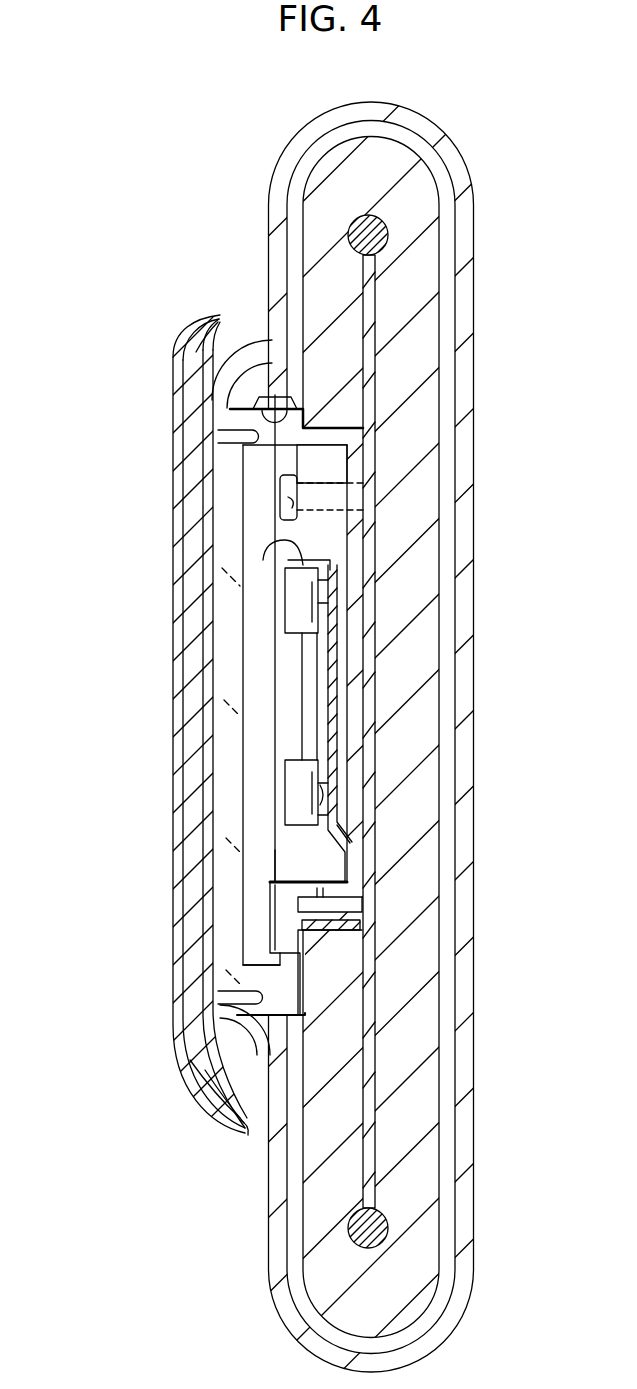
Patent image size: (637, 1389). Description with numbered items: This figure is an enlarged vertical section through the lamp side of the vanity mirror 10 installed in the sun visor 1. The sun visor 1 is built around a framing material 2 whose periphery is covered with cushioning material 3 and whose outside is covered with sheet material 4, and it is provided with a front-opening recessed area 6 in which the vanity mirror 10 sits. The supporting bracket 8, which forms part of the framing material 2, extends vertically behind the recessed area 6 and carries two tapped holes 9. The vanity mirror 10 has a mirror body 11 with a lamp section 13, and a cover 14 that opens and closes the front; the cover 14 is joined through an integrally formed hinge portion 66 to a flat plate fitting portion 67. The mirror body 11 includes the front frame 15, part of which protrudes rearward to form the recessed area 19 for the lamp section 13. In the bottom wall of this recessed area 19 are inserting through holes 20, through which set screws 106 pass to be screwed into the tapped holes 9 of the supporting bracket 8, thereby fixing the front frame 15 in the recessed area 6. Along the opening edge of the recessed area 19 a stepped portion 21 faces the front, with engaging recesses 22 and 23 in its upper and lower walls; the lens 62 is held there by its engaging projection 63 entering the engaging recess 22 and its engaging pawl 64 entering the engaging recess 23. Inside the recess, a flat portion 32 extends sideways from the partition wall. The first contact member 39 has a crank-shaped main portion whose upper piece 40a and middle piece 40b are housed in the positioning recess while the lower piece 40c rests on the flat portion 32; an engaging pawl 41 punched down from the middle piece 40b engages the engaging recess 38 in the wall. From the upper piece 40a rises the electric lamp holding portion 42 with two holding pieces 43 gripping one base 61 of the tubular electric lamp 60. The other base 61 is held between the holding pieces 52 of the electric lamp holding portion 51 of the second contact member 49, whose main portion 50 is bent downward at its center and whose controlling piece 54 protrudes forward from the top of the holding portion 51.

The sun visor 1 is at (137, 186).
The framing material 2 is at (370, 230).
The cushioning material 3 is at (440, 642).
The sheet material 4 is at (476, 700).
The recessed area 6 is at (272, 412).
The supporting bracket 8 is at (374, 310).
The tapped holes 9 is at (348, 507).
The vanity mirror 10 is at (162, 468).
The mirror body 11 is at (200, 1088).
The lamp section 13 is at (213, 725).
The cover 14 is at (176, 672).
The front frame 15 is at (242, 346).
The recessed area 19 is at (276, 446).
The inserting through holes 20 is at (350, 480).
The stepped portion 21 is at (306, 426).
The engaging recess 22 is at (240, 440).
The engaging recess 23 is at (255, 996).
The flat portion 32 is at (275, 968).
The engaging recess 38 is at (358, 895).
The first contact member 39 is at (270, 905).
The upper piece 40a is at (338, 832).
The middle piece 40b is at (276, 853).
The lower piece 40c is at (270, 935).
The engaging pawl 41 is at (318, 880).
The electric lamp holding portion 42 is at (340, 793).
The holding pieces 43 is at (285, 795).
The second contact member 49 is at (343, 738).
The main portion 50 is at (348, 680).
The electric lamp holding portion 51 is at (340, 580).
The holding pieces 52 is at (274, 598).
The controlling piece 54 is at (285, 546).
The electric lamp 60 is at (300, 705).
The bases 61 is at (298, 618).
The lens 62 is at (212, 818).
The engaging projection 63 is at (214, 388).
The engaging pawl 64 is at (222, 1050).
The hinge portion 66 is at (250, 1133).
The fitting portion 67 is at (235, 1112).
The set screws 106 is at (293, 505).